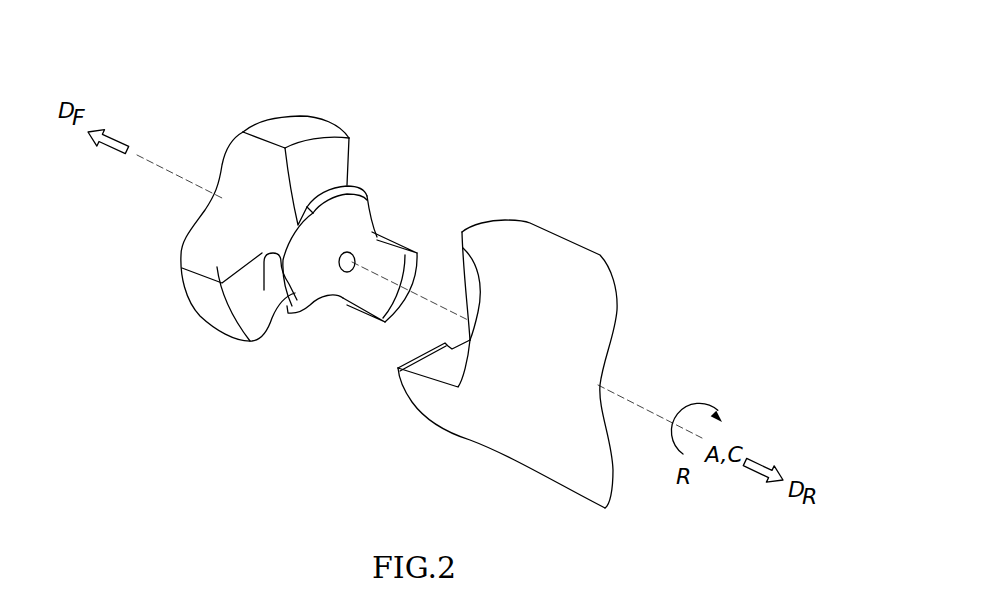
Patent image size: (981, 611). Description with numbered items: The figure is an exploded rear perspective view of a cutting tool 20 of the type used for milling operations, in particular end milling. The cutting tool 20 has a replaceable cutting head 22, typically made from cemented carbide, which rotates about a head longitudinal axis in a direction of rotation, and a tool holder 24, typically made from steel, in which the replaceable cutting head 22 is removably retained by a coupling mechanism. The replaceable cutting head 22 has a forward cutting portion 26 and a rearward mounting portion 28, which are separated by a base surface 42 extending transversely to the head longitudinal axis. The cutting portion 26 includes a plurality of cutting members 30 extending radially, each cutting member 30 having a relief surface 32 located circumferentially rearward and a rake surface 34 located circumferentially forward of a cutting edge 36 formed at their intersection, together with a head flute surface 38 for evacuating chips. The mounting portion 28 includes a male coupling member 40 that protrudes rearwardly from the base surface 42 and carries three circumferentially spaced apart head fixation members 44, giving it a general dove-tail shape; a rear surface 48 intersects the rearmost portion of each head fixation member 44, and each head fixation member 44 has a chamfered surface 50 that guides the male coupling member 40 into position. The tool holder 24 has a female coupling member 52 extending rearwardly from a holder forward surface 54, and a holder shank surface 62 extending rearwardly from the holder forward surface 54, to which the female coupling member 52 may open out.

The cutting tool 20 is at (508, 122).
The replaceable cutting head 22 is at (155, 125).
The tool holder 24 is at (610, 242).
The cutting portion 26 is at (148, 238).
The mounting portion 28 is at (380, 196).
The cutting member 30 is at (352, 120).
The relief surface 32 is at (285, 125).
The rake surface 34 is at (183, 268).
The cutting edge 36 is at (180, 252).
The head flute surface 38 is at (217, 268).
The male coupling member 40 is at (360, 186).
The base surface 42 is at (263, 310).
The head fixation member 44 is at (380, 262).
The rear surface 48 is at (353, 240).
The chamfered surface 50 is at (262, 268).
The female coupling member 52 is at (432, 328).
The holder forward surface 54 is at (415, 353).
The holder shank surface 62 is at (500, 383).